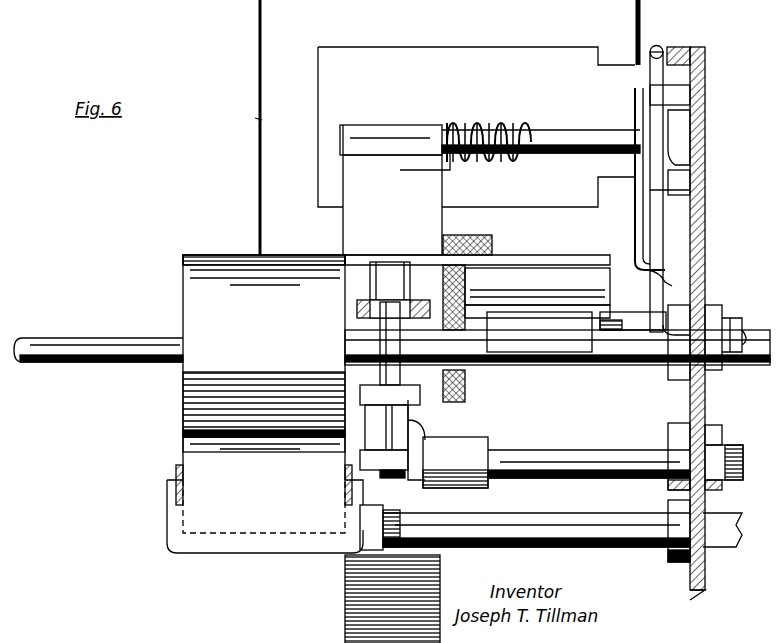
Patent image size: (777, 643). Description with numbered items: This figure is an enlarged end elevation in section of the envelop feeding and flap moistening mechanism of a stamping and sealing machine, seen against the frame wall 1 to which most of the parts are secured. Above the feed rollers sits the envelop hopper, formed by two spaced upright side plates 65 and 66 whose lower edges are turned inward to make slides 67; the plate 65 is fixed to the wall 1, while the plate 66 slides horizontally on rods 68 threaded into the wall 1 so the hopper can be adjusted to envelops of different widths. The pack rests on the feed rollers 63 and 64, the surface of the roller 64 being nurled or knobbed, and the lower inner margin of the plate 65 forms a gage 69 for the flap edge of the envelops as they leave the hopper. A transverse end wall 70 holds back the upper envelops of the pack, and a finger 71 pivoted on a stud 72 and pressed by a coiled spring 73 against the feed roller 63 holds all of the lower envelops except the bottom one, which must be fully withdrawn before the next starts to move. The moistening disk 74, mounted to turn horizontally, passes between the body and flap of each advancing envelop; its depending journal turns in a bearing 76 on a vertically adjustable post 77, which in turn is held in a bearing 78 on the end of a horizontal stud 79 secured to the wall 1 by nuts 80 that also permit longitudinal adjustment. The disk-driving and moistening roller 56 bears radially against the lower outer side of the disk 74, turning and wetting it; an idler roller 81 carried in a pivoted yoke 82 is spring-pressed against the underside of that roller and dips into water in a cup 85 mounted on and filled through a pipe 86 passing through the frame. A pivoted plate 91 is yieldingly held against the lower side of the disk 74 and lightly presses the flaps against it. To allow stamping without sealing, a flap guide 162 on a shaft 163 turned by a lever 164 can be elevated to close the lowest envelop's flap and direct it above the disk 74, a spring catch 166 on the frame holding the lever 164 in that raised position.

The wall 1 is at (705, 60).
The disk-driving and moistening roller 56 is at (188, 282).
The feed roller 63 is at (348, 590).
The feed roller 64 is at (492, 243).
The side plate 65 is at (636, 8).
The side plate 66 is at (259, 158).
The slide 67 is at (665, 281).
The rod 68 is at (70, 345).
The gage 69 is at (635, 244).
The end wall 70 is at (476, 127).
The finger 71 is at (440, 195).
The stud 72 is at (567, 138).
The coiled spring 73 is at (490, 125).
The moistening disk 74 is at (218, 254).
The bearing 76 is at (385, 275).
The vertically adjustable post 77 is at (390, 340).
The bearing 78 is at (375, 440).
The horizontal stud 79 is at (578, 468).
The nut 80 is at (705, 440).
The idler roller 81 is at (205, 455).
The yoke 82 is at (176, 492).
The cup 85 is at (172, 530).
The pipe 86 is at (536, 547).
The plate 91 is at (592, 283).
The flap guide 162 is at (548, 352).
The shaft 163 is at (633, 355).
The lever 164 is at (690, 190).
The spring catch 166 is at (670, 97).